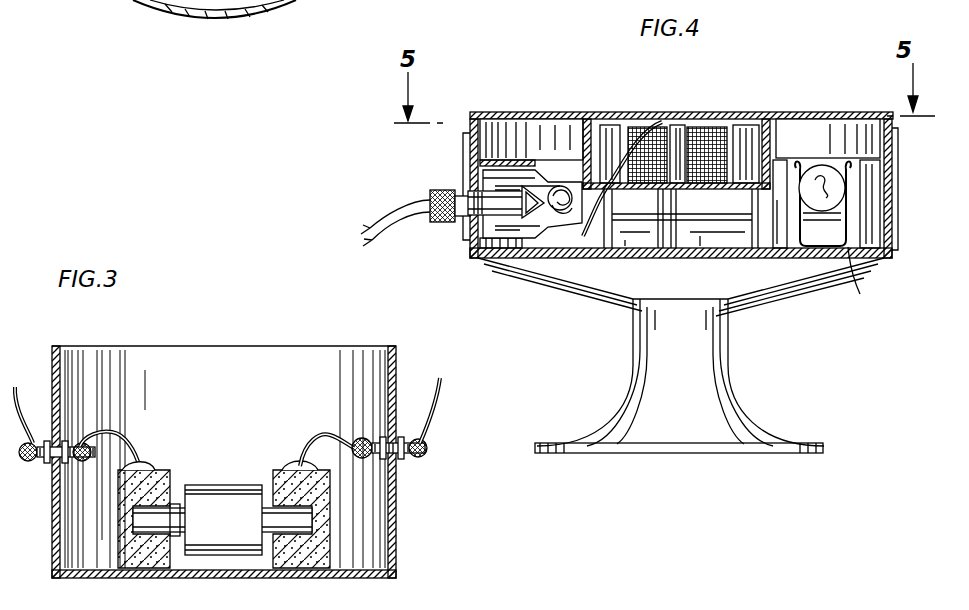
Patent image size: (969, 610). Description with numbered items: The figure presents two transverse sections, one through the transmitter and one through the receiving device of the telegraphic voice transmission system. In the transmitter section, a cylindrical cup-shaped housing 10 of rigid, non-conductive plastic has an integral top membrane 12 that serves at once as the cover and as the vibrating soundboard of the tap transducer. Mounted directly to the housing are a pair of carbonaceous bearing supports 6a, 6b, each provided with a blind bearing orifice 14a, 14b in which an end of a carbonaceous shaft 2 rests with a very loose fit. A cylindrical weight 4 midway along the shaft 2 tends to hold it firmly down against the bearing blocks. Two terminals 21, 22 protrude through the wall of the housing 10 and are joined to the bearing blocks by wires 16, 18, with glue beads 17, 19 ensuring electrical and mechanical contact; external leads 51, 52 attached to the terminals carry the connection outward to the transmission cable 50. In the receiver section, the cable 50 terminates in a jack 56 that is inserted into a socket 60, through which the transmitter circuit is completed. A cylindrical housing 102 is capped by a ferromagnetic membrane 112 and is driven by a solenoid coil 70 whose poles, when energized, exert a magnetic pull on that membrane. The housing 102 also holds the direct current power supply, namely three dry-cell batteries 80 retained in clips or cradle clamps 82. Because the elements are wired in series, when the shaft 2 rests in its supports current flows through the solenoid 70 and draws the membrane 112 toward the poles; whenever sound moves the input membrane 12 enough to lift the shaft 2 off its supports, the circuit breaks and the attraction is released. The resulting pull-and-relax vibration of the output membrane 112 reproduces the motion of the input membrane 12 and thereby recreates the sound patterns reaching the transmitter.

In FIG. 3, the shaft 2 is at (184, 485).
In FIG. 3, the weight 4 is at (222, 497).
In FIG. 3, the bearing support 6a is at (332, 488).
In FIG. 3, the bearing support 6b is at (118, 505).
In FIG. 3, the housing 10 is at (398, 354).
In FIG. 3, the membrane 12 is at (366, 568).
In FIG. 3, the bearing orifice 14a is at (280, 515).
In FIG. 3, the bearing orifice 14b is at (150, 512).
In FIG. 3, the wire 16 is at (341, 436).
In FIG. 3, the glue bead 17 is at (292, 465).
In FIG. 3, the wire 18 is at (118, 432).
In FIG. 3, the glue bead 19 is at (177, 512).
In FIG. 3, the terminal 21 is at (421, 456).
In FIG. 3, the terminal 22 is at (36, 442).
In FIG. 4, the transmission cable 50 is at (414, 220).
In FIG. 3, the right external lead 51 is at (442, 380).
In FIG. 3, the left external lead 52 is at (6, 383).
In FIG. 4, the jack 56 is at (483, 203).
In FIG. 4, the socket 60 is at (530, 175).
In FIG. 4, the solenoid coil 70 is at (710, 127).
In FIG. 4, the dry-cell batteries 80 is at (822, 186).
In FIG. 4, the clips 82 is at (869, 282).
In FIG. 4, the cylindrical housing 102 is at (742, 295).
In FIG. 4, the membrane 112 is at (563, 118).